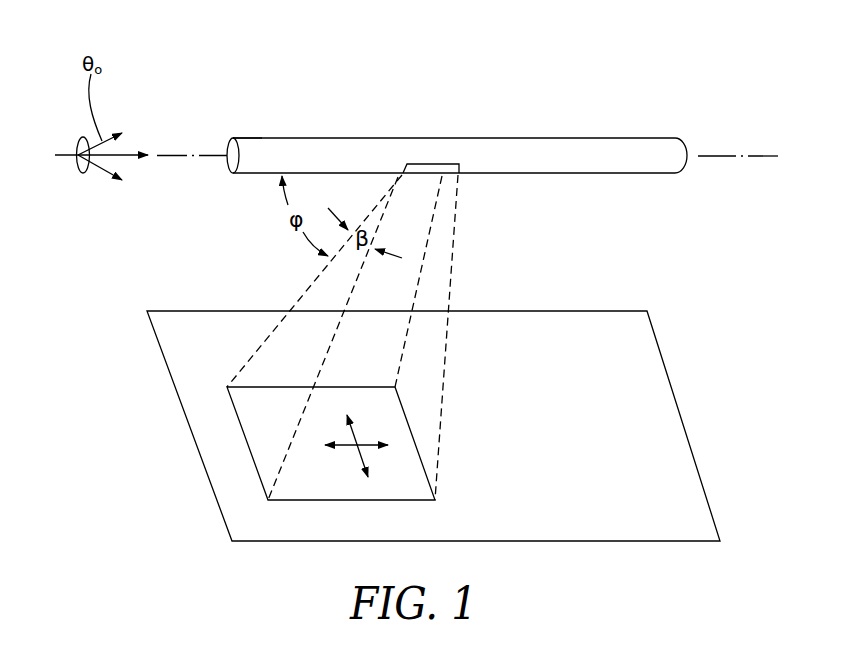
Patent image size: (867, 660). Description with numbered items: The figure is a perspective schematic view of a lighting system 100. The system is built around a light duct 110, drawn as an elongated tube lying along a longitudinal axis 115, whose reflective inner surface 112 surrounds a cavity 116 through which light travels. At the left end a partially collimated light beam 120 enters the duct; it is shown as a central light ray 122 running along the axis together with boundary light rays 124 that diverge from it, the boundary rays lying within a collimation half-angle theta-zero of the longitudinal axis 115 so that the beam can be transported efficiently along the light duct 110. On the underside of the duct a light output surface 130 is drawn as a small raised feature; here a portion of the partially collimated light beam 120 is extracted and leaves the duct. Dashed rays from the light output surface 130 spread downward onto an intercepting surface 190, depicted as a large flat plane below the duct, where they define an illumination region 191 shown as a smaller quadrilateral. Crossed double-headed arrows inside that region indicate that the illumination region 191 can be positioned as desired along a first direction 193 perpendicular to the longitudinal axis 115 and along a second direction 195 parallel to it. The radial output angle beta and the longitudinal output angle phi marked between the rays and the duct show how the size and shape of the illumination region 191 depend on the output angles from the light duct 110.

The lighting system 100 is at (203, 55).
The light duct 110 is at (603, 130).
The reflective inner surface 112 is at (227, 170).
The longitudinal axis 115 is at (760, 156).
The cavity 116 is at (222, 137).
The partially collimated light beam 120 is at (77, 143).
The central light ray 122 is at (127, 152).
The boundary light rays 124 is at (101, 170).
The light output surface 130 is at (428, 178).
The intercepting surface 190 is at (589, 363).
The illumination region 191 is at (412, 475).
The first direction 193 is at (352, 436).
The second direction 195 is at (350, 451).